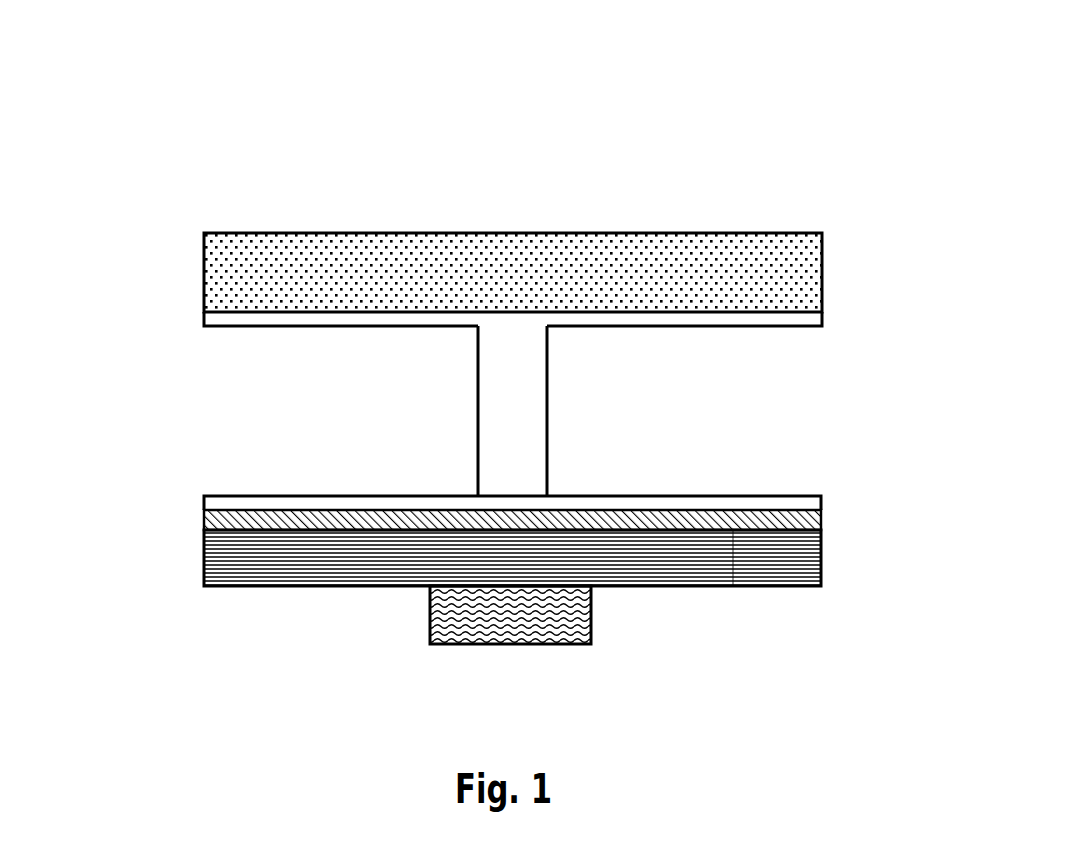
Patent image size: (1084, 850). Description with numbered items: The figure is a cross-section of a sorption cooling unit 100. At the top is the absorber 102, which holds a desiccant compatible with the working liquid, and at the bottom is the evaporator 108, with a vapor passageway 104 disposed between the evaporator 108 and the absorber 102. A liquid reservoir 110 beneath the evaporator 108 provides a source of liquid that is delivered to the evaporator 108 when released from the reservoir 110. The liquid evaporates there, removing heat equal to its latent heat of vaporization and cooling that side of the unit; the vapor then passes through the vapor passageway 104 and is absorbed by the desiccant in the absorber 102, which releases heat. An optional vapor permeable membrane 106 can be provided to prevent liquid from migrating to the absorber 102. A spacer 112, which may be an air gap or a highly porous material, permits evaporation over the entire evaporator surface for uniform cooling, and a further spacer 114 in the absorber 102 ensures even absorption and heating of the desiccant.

The sorption cooling unit 100 is at (617, 183).
The absorber 102 is at (204, 278).
The vapor passageway 104 is at (547, 390).
The vapor permeable membrane 106 is at (246, 511).
The evaporator 108 is at (667, 586).
The liquid reservoir 110 is at (455, 645).
The spacer 112 is at (733, 499).
The spacer 114 is at (292, 327).